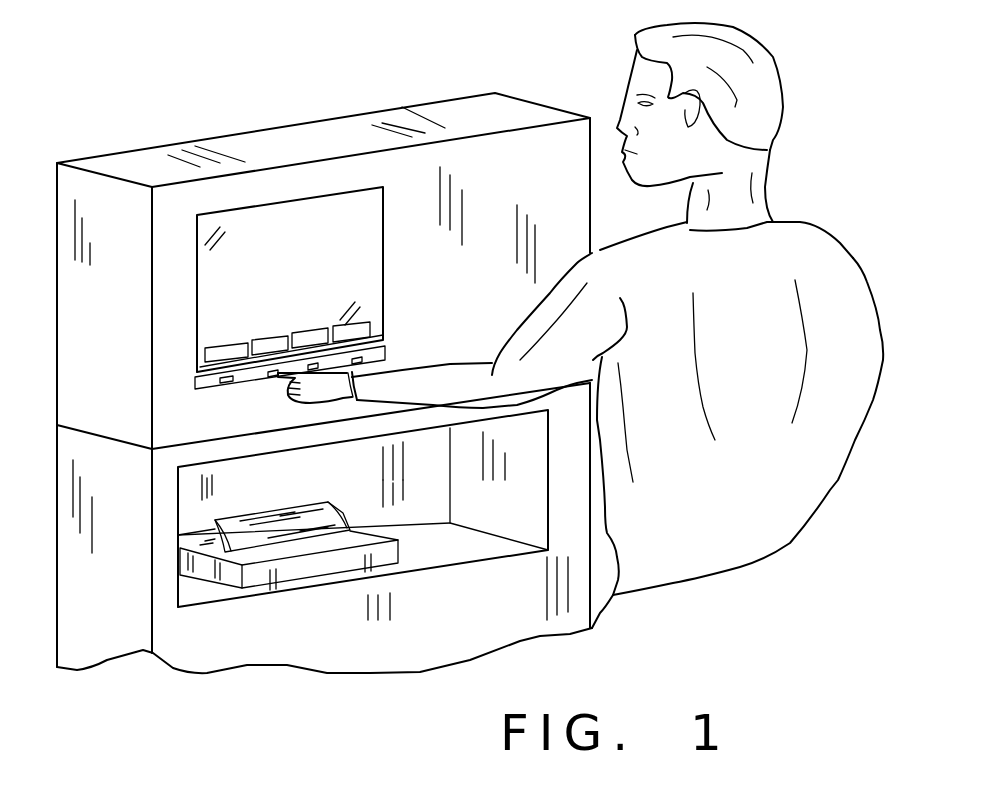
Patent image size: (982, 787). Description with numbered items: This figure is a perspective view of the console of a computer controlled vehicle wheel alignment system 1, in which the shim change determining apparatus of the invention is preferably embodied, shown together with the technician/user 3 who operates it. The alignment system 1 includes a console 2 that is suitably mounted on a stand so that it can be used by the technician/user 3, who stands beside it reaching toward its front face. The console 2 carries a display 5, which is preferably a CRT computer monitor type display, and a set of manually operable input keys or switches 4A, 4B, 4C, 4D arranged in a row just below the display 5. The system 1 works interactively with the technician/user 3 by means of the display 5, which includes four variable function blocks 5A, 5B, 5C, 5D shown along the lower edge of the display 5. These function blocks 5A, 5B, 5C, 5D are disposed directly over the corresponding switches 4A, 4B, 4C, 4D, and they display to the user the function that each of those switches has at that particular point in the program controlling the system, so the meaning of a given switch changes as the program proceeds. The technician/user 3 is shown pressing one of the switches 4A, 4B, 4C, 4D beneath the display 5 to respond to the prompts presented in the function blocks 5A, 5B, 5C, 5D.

The vehicle wheel alignment system 1 is at (203, 70).
The console 2 is at (432, 103).
The technician/user 3 is at (762, 50).
The input key or switch 4A is at (208, 387).
The input key or switch 4B is at (273, 376).
The input key or switch 4C is at (322, 364).
The input key or switch 4D is at (366, 357).
The display 5 is at (300, 238).
The variable function block 5A is at (218, 356).
The variable function block 5B is at (270, 347).
The variable function block 5C is at (311, 335).
The variable function block 5D is at (353, 330).